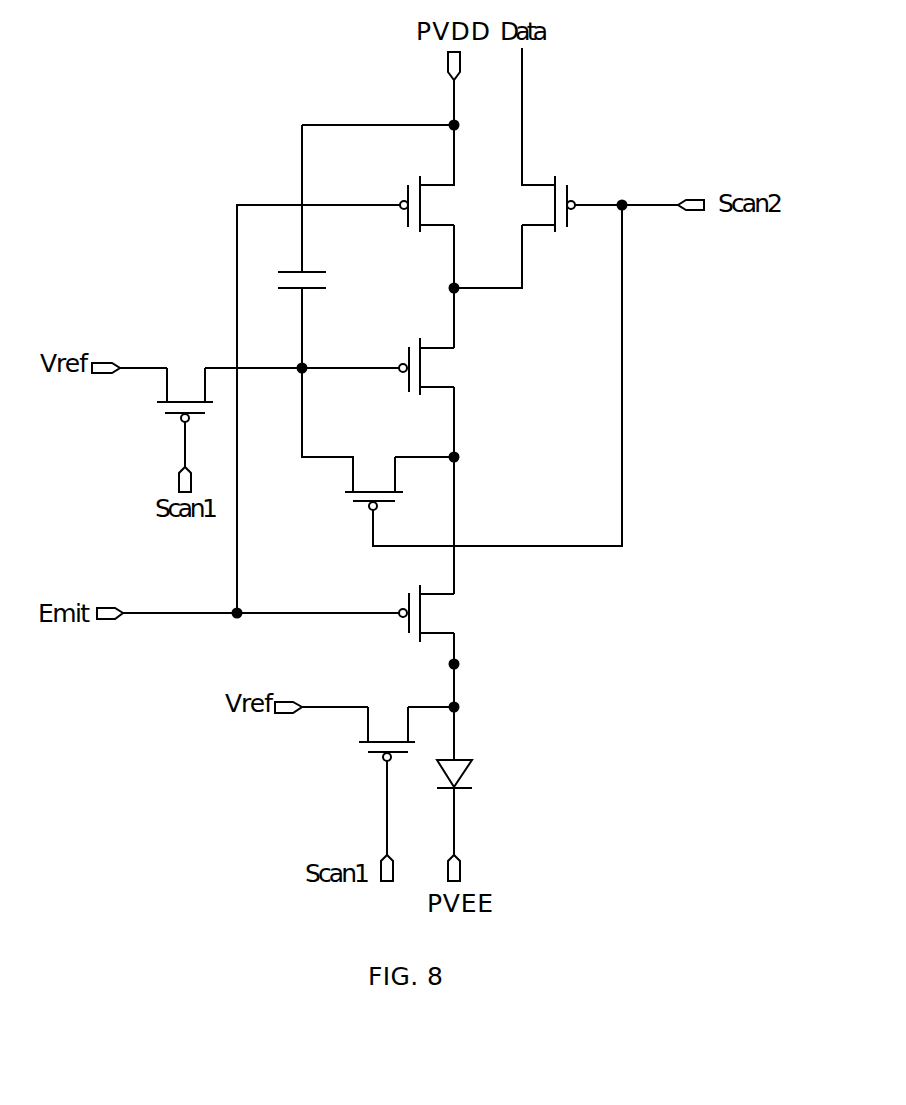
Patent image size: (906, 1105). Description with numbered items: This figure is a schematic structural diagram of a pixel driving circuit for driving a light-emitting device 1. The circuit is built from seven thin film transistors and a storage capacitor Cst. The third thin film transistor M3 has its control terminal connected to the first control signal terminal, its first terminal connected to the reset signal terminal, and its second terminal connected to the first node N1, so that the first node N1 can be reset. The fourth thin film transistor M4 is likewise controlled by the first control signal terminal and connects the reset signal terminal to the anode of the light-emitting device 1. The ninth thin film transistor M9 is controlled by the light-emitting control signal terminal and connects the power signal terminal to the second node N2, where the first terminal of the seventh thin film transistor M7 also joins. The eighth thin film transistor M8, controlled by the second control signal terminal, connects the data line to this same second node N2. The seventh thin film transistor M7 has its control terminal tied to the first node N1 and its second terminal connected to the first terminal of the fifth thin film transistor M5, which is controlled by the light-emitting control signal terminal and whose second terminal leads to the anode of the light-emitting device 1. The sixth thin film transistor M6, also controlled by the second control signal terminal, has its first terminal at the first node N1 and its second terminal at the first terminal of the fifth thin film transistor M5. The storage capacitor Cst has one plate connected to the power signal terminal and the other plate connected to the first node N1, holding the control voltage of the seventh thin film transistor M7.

The light-emitting device 1 is at (463, 765).
The third thin film transistor M3 is at (185, 382).
The fourth thin film transistor M4 is at (387, 716).
The fifth thin film transistor M5 is at (436, 613).
The sixth thin film transistor M6 is at (374, 467).
The seventh thin film transistor M7 is at (436, 366).
The eighth thin film transistor M8 is at (538, 204).
The ninth thin film transistor M9 is at (438, 204).
The storage capacitor Cst is at (325, 274).
The first node N1 is at (322, 387).
The second node N2 is at (472, 303).